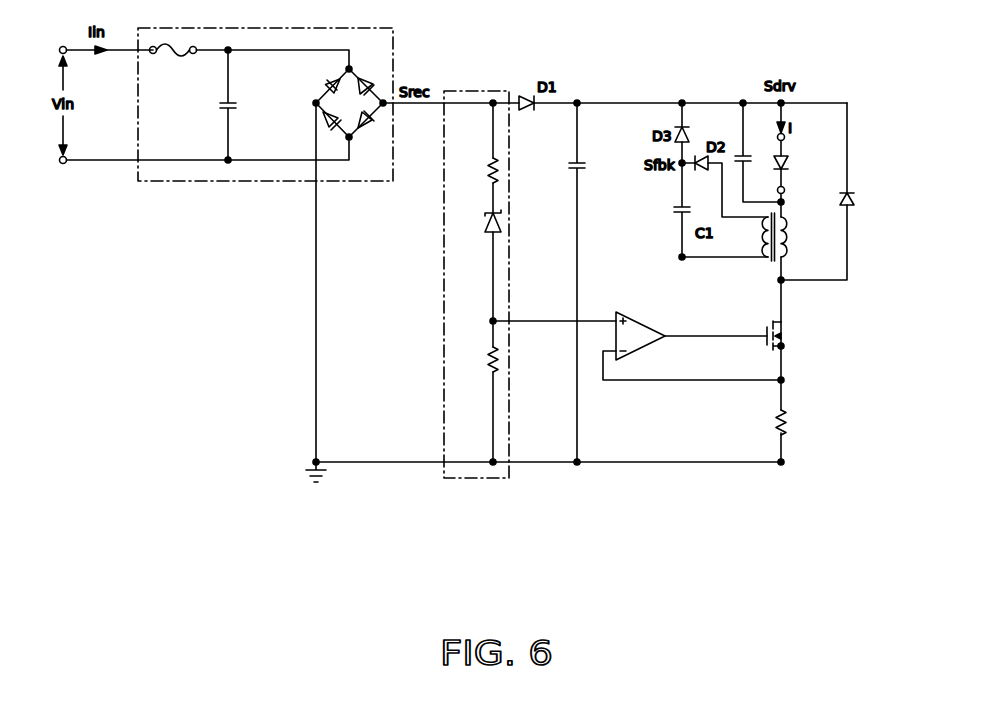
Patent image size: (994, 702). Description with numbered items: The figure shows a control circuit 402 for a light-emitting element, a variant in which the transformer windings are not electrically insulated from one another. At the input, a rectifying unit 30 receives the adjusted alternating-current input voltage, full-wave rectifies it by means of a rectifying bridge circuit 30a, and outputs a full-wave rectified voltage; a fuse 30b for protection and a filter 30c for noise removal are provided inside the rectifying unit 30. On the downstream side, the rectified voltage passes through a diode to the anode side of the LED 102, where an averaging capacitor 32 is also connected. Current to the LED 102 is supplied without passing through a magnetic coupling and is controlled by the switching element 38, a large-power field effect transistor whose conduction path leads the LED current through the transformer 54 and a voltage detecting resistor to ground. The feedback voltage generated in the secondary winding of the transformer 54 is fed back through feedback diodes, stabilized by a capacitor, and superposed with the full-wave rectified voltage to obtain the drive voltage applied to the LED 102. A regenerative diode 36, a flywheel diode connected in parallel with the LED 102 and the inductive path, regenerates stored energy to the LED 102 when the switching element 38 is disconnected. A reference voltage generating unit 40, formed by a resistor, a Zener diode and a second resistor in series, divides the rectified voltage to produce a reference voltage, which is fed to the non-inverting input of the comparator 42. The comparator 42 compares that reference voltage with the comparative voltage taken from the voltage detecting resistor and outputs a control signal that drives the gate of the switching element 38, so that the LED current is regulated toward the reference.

The rectifying unit 30 is at (193, 181).
The rectifying bridge circuit 30a is at (352, 66).
The fuse 30b is at (176, 60).
The filter 30c is at (237, 104).
The reference voltage generating unit 40 is at (505, 90).
The averaging capacitor 32 is at (580, 160).
The LED 102 is at (790, 165).
The transformer 54 is at (790, 242).
The regenerative diode 36 is at (858, 200).
The comparator 42 is at (635, 320).
The switching element 38 is at (788, 339).
The control circuit 402 is at (530, 554).